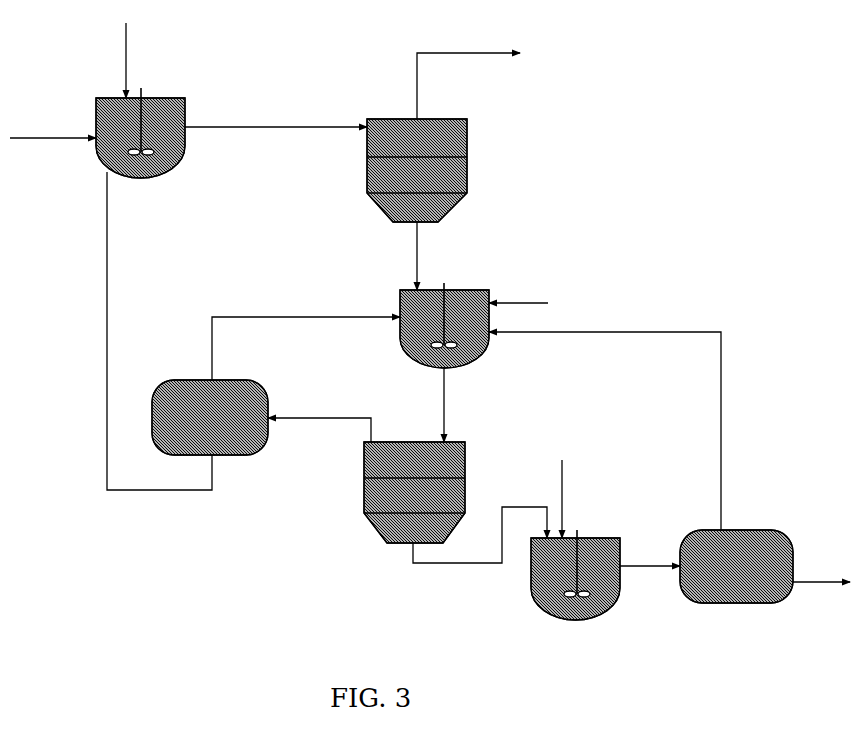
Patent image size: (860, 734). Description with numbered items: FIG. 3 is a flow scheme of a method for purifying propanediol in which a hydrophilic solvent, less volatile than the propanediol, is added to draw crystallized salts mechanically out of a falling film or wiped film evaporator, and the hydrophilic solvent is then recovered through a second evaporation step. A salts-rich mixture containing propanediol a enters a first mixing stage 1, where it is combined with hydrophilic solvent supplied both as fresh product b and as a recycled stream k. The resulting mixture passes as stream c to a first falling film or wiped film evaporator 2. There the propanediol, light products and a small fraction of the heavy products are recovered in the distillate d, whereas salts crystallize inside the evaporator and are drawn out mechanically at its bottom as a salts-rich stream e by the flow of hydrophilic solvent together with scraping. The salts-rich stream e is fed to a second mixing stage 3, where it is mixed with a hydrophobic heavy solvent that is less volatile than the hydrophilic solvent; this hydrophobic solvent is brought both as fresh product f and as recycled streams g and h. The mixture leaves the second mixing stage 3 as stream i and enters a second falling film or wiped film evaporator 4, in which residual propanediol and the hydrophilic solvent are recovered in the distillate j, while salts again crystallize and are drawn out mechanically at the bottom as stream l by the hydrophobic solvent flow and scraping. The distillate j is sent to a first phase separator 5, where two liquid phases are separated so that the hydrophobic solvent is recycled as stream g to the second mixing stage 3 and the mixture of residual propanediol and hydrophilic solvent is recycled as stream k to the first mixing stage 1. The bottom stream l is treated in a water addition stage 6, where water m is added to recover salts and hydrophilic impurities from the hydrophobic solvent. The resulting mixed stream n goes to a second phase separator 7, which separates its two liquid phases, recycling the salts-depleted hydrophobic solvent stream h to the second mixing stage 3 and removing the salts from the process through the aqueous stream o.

The first mixing stage 1 is at (140, 113).
The first falling film or wiped film evaporator 2 is at (449, 170).
The second mixing stage 3 is at (424, 325).
The second falling film or wiped film evaporator 4 is at (396, 492).
The first phase separator 5 is at (210, 404).
The water addition stage 6 is at (553, 575).
The second phase separator 7 is at (736, 553).
The salts-rich mixture containing 1,3-propanediol a is at (53, 130).
The fresh hydrophilic solvent b is at (105, 60).
The stream (c) from reactor 1 to separator 2 c is at (276, 120).
The distillate of the first evaporator d is at (468, 77).
The salts-rich stream e is at (402, 256).
The fresh hydrophobic solvent f is at (535, 311).
The recycled hydrophobic solvent stream g is at (306, 337).
The recycled salts-depleted hydrophobic solvent stream h is at (605, 421).
The stream (i) from reactor 3 to separator 4 i is at (461, 405).
The distillate of the second evaporator j is at (319, 420).
The recycled stream of residual 1,3-propanediol and hydrophilic solvent k is at (137, 331).
The bottom salts stream of the second evaporator l is at (467, 544).
The water m is at (586, 497).
The mixed stream n is at (650, 581).
The aqueous stream o is at (821, 597).